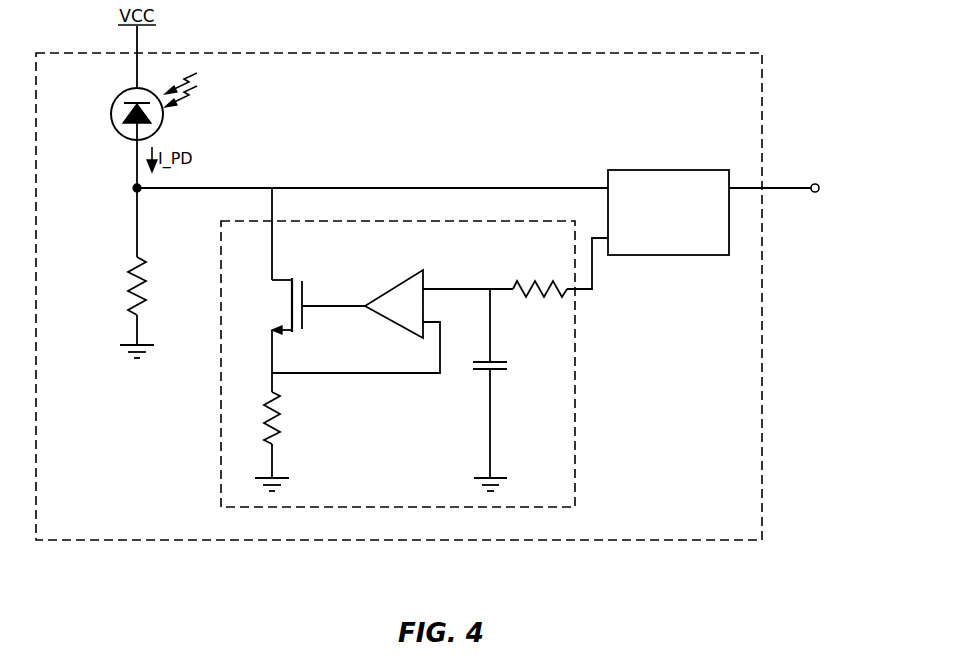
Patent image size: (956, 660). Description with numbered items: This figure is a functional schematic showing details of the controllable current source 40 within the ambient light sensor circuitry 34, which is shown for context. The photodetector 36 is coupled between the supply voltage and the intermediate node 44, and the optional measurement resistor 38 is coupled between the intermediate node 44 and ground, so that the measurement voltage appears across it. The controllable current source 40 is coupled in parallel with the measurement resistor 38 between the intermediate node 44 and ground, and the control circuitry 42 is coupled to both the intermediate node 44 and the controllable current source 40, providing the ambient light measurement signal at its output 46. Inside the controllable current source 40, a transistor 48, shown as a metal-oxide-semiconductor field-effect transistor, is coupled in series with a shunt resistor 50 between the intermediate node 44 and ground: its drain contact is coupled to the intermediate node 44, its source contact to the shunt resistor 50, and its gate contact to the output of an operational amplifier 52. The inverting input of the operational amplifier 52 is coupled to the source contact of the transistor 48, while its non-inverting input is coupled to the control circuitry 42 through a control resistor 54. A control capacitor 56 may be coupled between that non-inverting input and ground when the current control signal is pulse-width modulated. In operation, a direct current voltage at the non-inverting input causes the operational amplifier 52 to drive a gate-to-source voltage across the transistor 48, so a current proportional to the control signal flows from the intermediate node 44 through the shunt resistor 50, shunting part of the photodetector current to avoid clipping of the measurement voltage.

The ambient light sensor circuitry 34 is at (717, 527).
The photodetector 36 is at (117, 95).
The measurement resistor 38 is at (147, 299).
The controllable current source 40 is at (535, 492).
The control circuitry 42 is at (658, 235).
The intermediate node 44 is at (132, 187).
The output 46 is at (818, 180).
The transistor 48 is at (304, 291).
The shunt resistor 50 is at (282, 431).
The operational amplifier 52 is at (396, 287).
The control resistor 54 is at (548, 282).
The control capacitor 56 is at (497, 360).